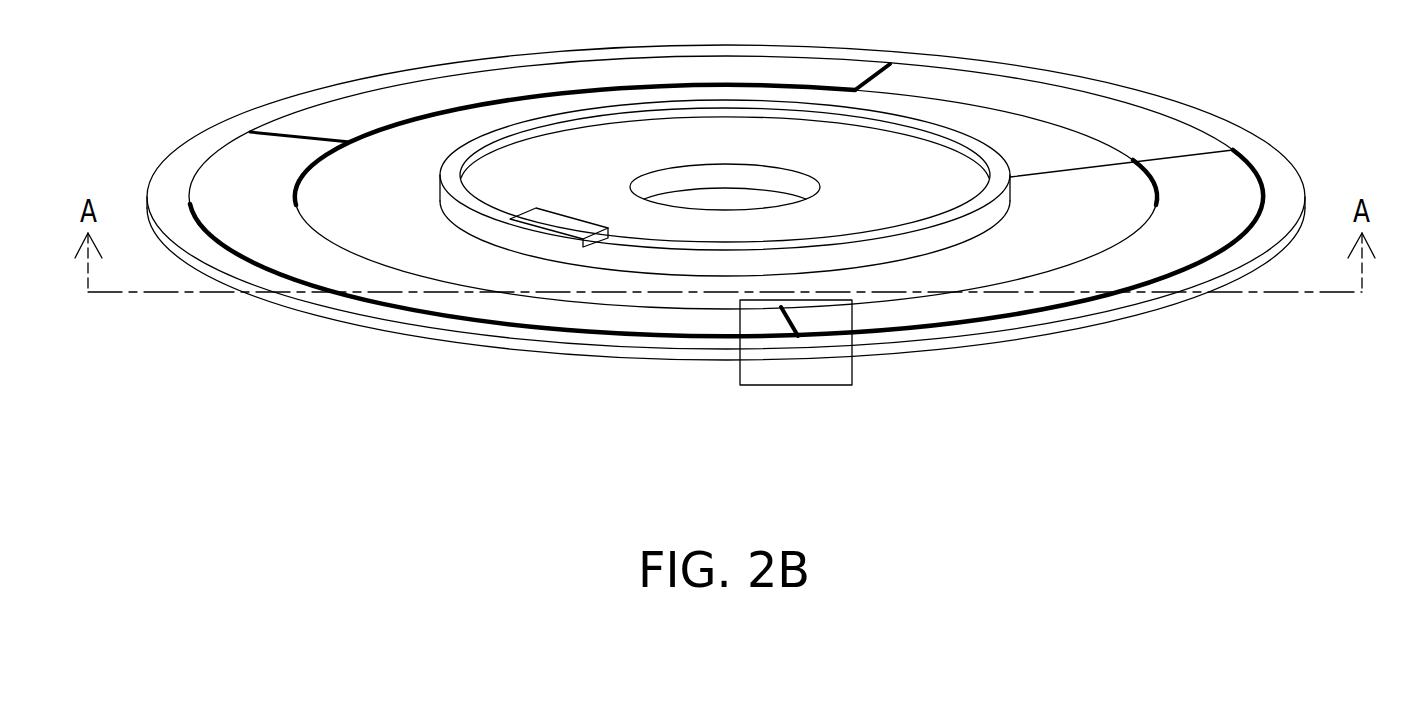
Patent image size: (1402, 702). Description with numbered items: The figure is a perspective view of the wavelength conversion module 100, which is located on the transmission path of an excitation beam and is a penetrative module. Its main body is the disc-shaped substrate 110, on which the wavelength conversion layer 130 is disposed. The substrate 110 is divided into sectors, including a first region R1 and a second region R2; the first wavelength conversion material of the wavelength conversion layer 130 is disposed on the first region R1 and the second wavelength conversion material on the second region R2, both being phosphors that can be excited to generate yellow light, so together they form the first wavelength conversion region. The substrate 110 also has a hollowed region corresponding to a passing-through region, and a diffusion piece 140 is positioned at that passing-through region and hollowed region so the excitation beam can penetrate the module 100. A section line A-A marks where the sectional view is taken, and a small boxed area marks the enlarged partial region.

The wavelength conversion module 100 is at (1393, 467).
The substrate 110 is at (1223, 133).
The wavelength conversion layer 130 is at (827, 320).
The diffusion piece 140 is at (987, 100).
The first region R1 is at (1133, 262).
The second region R2 is at (325, 262).